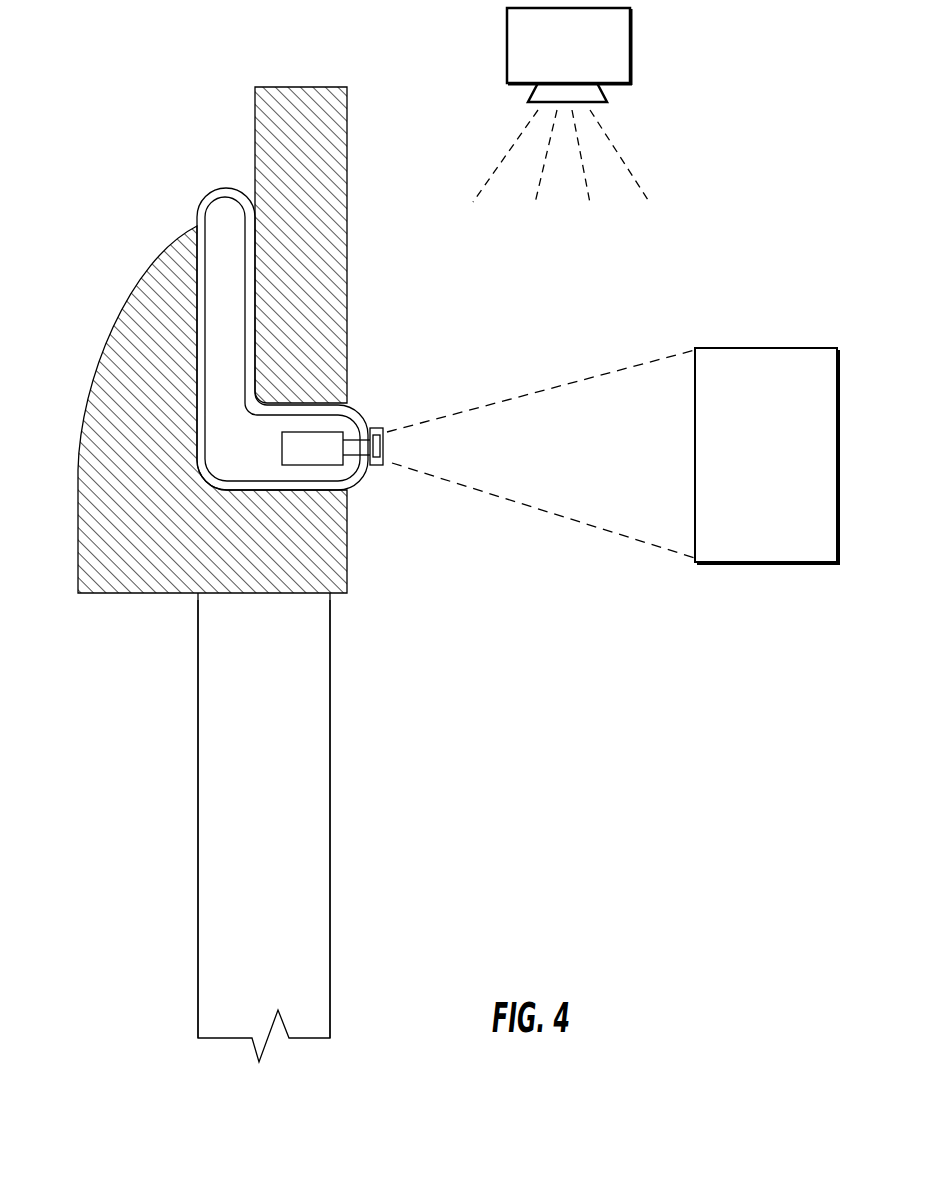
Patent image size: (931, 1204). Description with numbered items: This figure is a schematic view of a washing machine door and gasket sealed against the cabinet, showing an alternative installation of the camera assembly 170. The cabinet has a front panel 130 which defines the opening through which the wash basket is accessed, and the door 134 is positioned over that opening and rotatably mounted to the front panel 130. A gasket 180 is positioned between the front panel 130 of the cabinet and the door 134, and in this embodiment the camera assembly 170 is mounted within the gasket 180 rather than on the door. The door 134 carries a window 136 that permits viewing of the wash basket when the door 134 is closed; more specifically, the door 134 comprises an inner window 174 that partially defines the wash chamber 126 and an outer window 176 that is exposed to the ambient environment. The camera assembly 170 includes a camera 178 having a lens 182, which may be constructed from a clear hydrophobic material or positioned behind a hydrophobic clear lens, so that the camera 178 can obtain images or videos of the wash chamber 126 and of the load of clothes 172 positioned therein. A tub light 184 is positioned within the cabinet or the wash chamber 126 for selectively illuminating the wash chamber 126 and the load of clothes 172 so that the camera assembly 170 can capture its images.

The wash chamber 126 is at (473, 768).
The front panel 130 is at (347, 152).
The door 134 is at (100, 361).
The window 136 is at (275, 767).
The camera assembly 170 is at (404, 399).
The load of clothes 172 is at (782, 458).
The inner window 174 is at (330, 700).
The outer window 176 is at (198, 718).
The camera 178 is at (326, 449).
The gasket 180 is at (350, 408).
The lens 182 is at (390, 438).
The tub light 184 is at (582, 61).